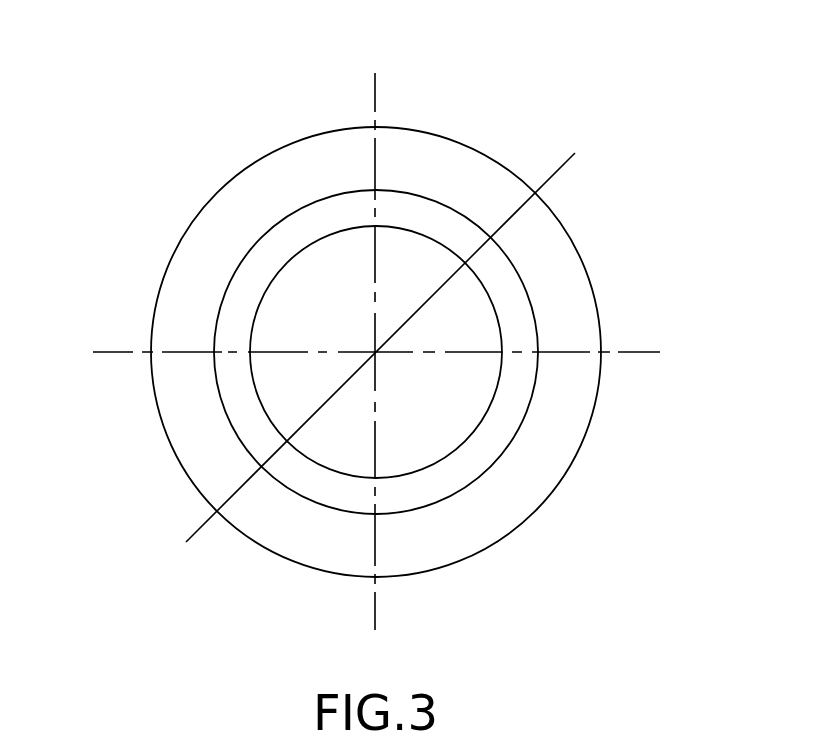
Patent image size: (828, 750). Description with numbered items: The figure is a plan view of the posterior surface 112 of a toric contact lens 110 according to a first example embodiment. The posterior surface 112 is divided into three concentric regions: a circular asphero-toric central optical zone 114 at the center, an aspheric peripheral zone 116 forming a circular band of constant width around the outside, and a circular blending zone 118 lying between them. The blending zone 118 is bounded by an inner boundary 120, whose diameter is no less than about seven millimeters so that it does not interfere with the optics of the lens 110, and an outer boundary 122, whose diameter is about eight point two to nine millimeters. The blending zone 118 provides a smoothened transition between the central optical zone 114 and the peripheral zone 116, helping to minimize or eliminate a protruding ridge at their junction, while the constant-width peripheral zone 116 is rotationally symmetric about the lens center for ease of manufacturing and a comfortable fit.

The toric contact lens 110 is at (160, 138).
The posterior surface 112 is at (190, 293).
The central optical zone 114 is at (450, 327).
The peripheral zone 116 is at (206, 434).
The blending zone 118 is at (497, 431).
The inner boundary 120 is at (460, 447).
The outer boundary 122 is at (431, 507).